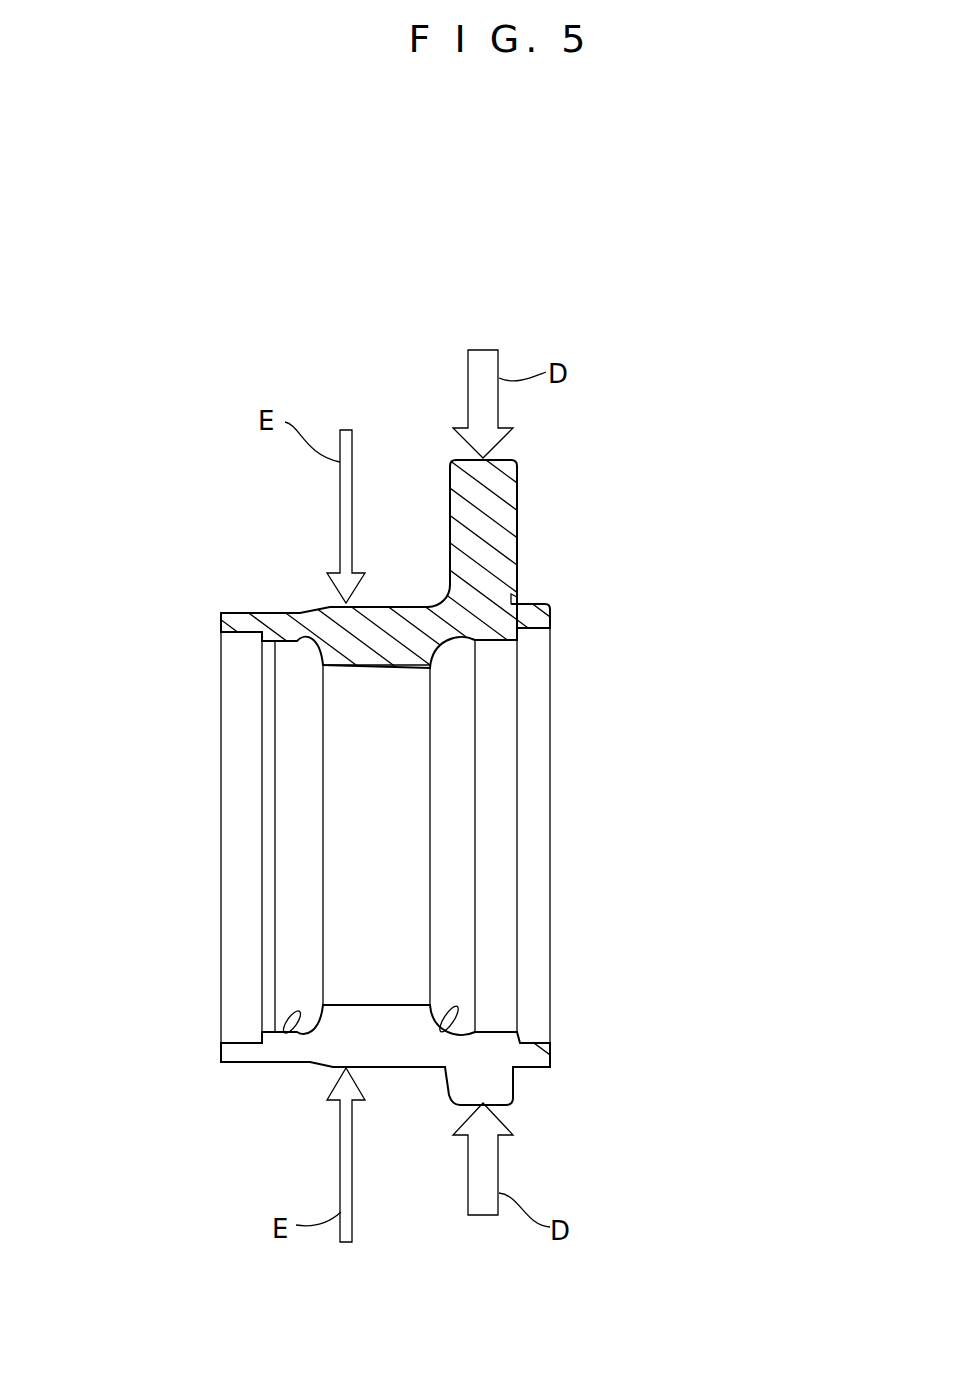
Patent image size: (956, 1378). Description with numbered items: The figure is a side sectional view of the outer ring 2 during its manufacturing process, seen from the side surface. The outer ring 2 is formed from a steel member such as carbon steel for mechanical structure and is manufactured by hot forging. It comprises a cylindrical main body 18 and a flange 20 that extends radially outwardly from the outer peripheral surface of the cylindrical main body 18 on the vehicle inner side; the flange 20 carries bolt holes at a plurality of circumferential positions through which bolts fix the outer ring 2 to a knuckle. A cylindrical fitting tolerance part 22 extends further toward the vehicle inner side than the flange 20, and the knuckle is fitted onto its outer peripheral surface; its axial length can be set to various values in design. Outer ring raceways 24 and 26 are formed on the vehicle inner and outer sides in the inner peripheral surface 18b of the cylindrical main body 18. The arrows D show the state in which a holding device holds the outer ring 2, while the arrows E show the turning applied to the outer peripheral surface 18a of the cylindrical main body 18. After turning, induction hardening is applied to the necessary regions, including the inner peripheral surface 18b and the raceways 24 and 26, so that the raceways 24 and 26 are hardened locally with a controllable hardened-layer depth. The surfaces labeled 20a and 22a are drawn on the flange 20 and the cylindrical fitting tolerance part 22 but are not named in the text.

The outer ring 2 is at (308, 605).
The cylindrical main body 18 is at (297, 1063).
The outer peripheral surface of the cylindrical main body 18a is at (400, 1068).
The inner peripheral surface of the cylindrical main body 18b is at (360, 667).
The flange 20 is at (500, 458).
The flange side face 20a is at (519, 490).
The cylindrical fitting tolerance part 22 is at (542, 620).
The outer ring flange 22a is at (537, 603).
The outer ring raceway 24 is at (298, 1022).
The outer ring raceway 26 is at (445, 1020).